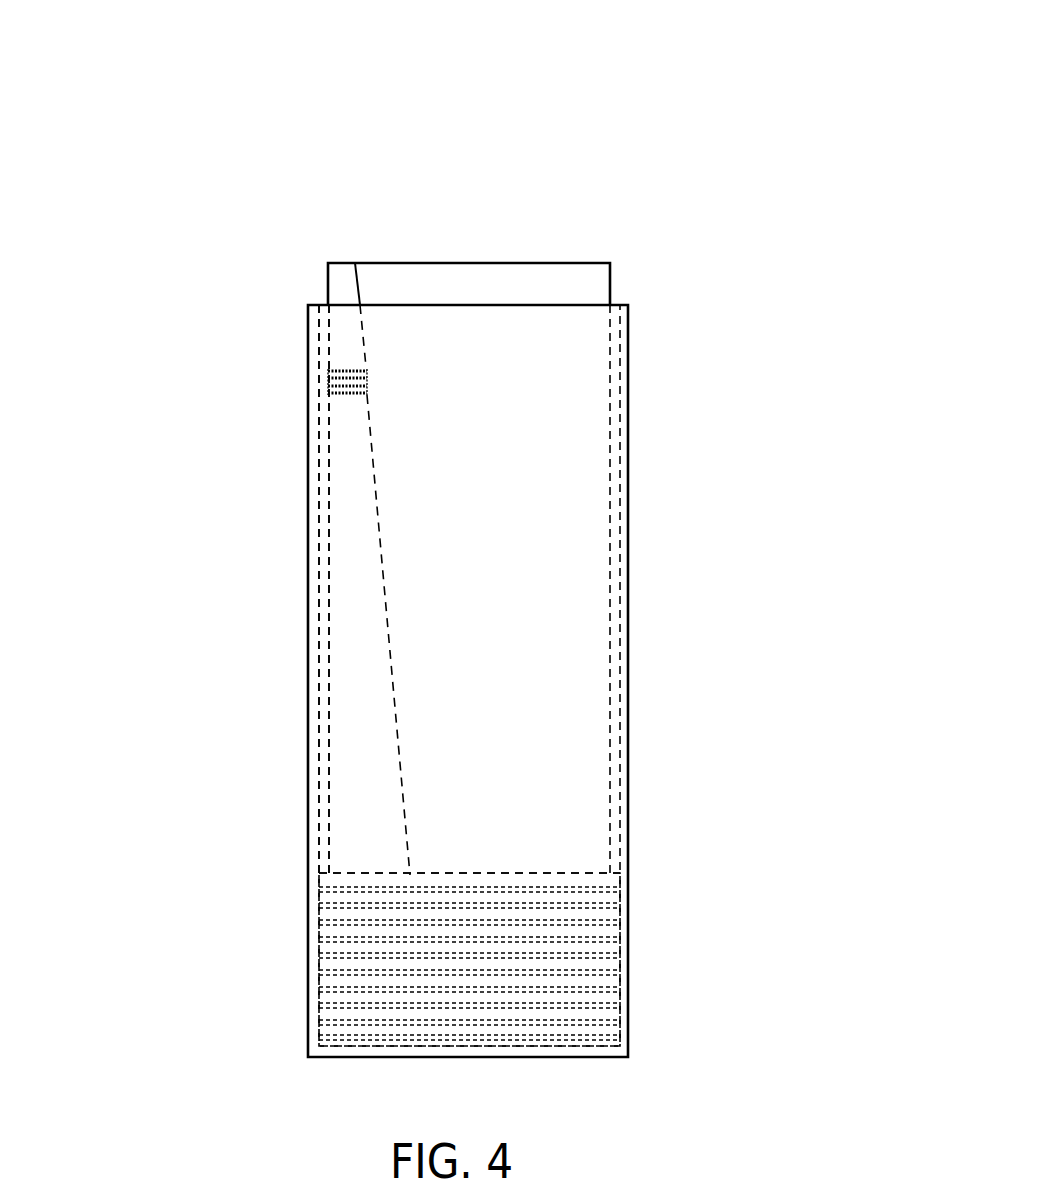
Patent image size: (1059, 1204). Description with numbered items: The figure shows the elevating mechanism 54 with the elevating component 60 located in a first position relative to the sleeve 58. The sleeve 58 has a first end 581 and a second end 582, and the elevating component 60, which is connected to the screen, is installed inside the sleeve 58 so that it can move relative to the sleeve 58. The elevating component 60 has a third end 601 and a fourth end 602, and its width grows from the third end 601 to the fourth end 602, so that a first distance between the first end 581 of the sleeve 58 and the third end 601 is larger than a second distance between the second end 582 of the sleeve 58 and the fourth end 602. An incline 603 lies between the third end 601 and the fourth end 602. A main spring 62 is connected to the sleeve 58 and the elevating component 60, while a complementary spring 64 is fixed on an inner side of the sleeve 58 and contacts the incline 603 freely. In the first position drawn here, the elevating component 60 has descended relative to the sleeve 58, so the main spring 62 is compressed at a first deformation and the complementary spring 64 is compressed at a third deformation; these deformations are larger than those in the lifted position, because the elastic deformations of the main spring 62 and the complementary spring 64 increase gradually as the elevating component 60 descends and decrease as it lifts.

The elevating mechanism 54 is at (603, 116).
The sleeve 58 is at (167, 715).
The first end 581 is at (308, 875).
The second end 582 is at (316, 305).
The elevating component 60 is at (733, 212).
The third end 601 is at (408, 873).
The fourth end 602 is at (358, 263).
The incline 603 is at (370, 437).
The main spring 62 is at (594, 932).
The complementary spring 64 is at (344, 367).